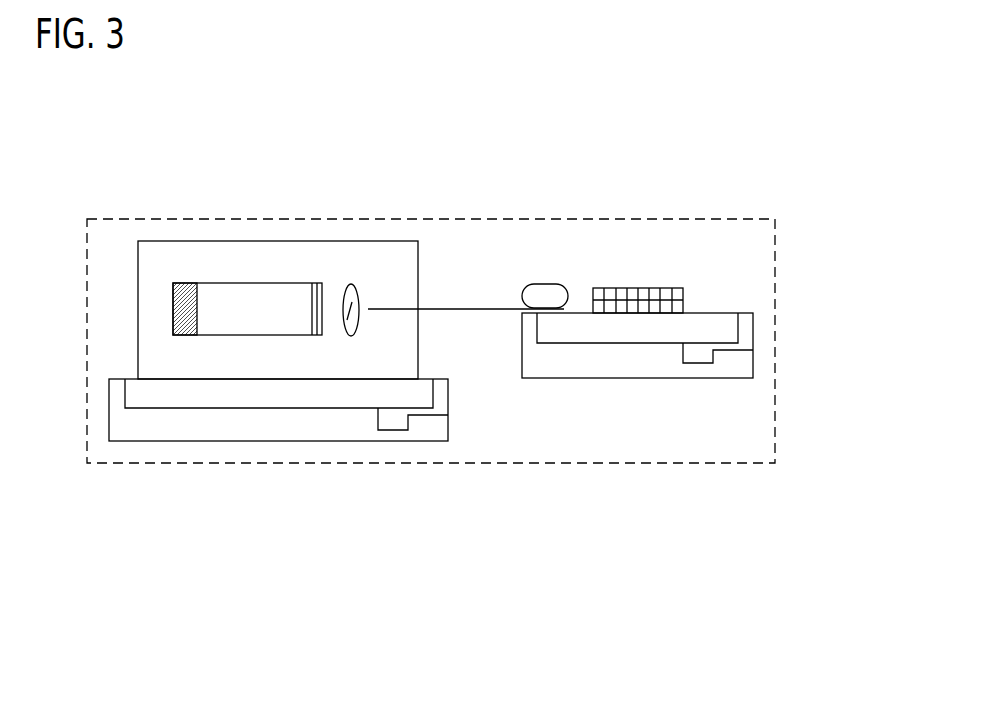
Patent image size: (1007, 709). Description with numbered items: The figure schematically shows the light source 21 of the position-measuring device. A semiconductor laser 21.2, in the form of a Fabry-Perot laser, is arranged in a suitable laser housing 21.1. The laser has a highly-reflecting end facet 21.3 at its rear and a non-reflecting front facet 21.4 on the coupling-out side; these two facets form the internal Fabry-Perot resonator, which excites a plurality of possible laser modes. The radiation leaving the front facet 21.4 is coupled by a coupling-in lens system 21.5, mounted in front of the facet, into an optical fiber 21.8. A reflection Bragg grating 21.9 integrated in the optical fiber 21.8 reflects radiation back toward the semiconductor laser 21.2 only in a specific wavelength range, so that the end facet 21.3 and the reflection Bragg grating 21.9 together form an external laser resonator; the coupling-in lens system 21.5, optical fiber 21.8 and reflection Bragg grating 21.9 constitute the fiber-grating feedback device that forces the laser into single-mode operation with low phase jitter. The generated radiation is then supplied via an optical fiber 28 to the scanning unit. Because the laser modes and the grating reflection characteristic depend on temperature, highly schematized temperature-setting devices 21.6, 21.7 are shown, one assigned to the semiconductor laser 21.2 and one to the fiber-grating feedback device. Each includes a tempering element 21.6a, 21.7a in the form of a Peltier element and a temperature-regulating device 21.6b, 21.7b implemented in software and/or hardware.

The light source 21 is at (87, 430).
The laser housing 21.1 is at (245, 241).
The semiconductor laser 21.2 is at (226, 279).
The end facet 21.3 is at (190, 313).
The front facet 21.4 is at (320, 283).
The coupling-in lens system 21.5 is at (350, 336).
The temperature-setting device 21.6 is at (155, 443).
The tempering element 21.6a is at (220, 400).
The temperature-regulating device 21.6b is at (435, 430).
The temperature-setting device 21.7 is at (629, 381).
The tempering element 21.7a is at (660, 340).
The temperature-regulating device 21.7b is at (742, 366).
The optical fiber 21.8 is at (468, 309).
The reflection Bragg grating 21.9 is at (690, 301).
The optical fiber 28 is at (672, 294).